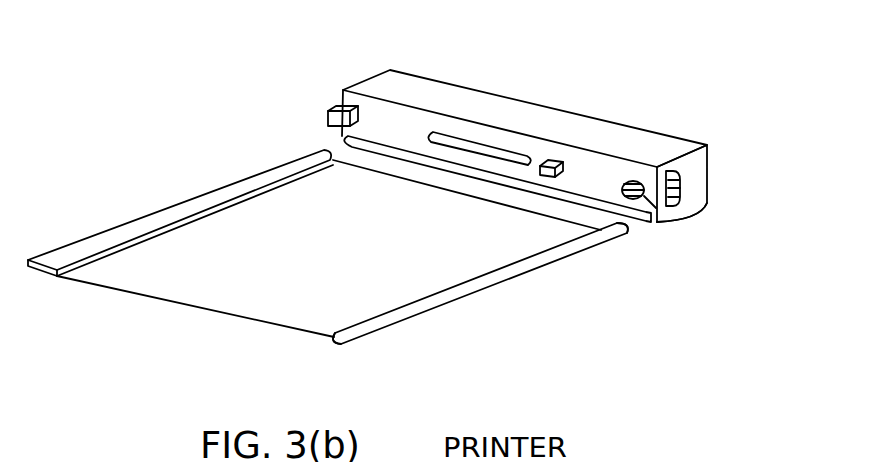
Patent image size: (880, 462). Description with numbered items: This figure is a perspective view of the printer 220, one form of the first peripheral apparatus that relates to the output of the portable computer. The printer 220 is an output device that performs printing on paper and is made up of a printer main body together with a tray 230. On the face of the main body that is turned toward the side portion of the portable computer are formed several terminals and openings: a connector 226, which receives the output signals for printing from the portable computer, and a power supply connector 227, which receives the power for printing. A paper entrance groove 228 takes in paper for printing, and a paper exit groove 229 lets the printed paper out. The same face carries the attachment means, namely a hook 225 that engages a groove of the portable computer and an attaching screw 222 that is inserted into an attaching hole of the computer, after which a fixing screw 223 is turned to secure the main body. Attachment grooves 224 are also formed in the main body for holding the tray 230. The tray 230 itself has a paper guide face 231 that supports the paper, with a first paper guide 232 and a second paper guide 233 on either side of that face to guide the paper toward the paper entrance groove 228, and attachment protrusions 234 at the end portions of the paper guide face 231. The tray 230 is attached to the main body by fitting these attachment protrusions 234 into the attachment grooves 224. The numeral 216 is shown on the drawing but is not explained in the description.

The printer 220 is at (513, 233).
The printer housing 216 is at (455, 100).
The attaching screw 222 is at (707, 188).
The fixing screw 223 is at (672, 160).
The attachment grooves 224 is at (649, 220).
The hook 225 is at (337, 106).
The connector 226 is at (426, 129).
The power supply connector 227 is at (548, 158).
The paper entrance groove 228 is at (344, 138).
The paper exit groove 229 is at (599, 112).
The tray 230 is at (480, 293).
The paper guide face 231 is at (322, 263).
The first paper guide 232 is at (78, 236).
The second paper guide 233 is at (347, 346).
The attachment protrusions 234 is at (628, 235).